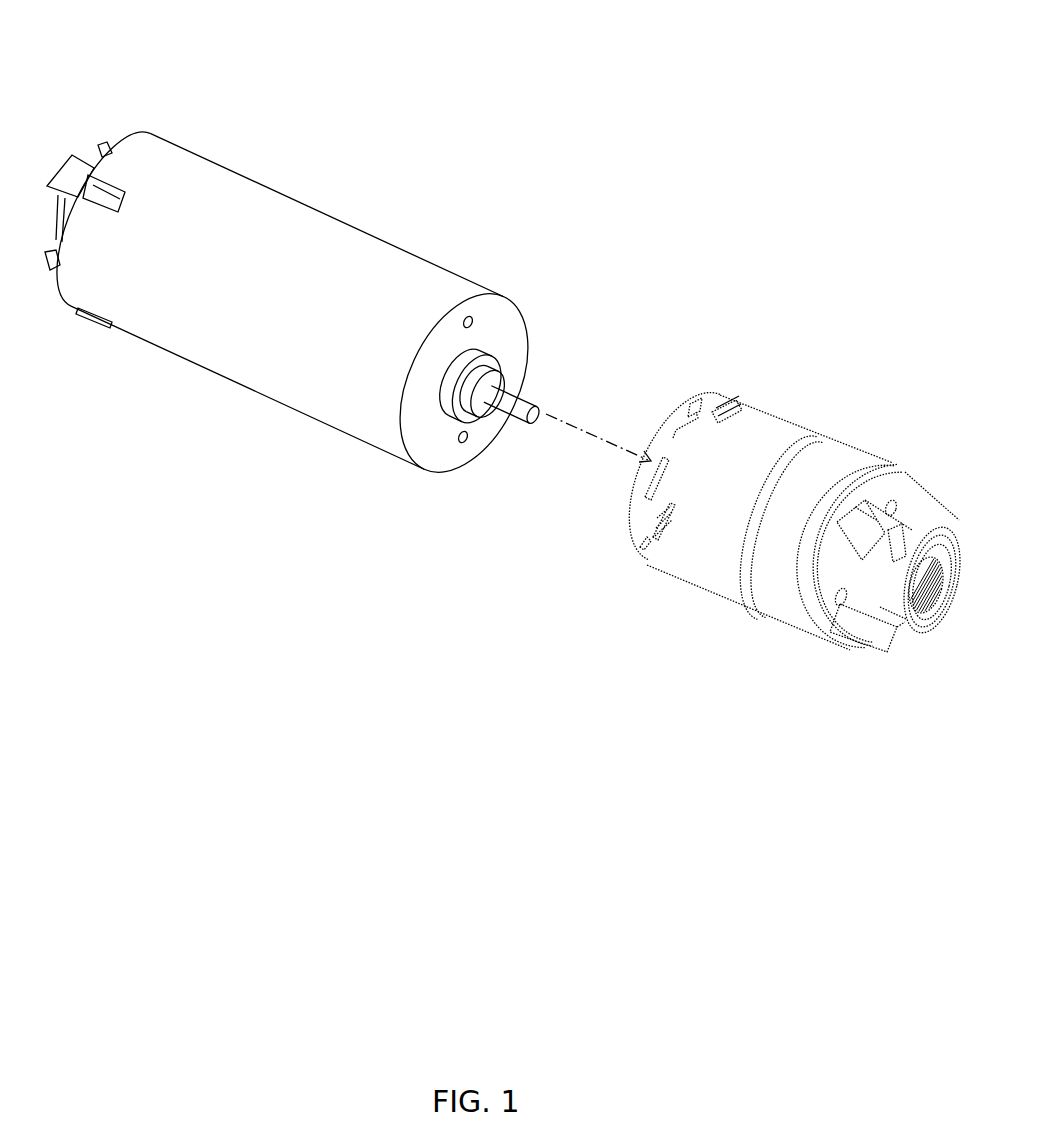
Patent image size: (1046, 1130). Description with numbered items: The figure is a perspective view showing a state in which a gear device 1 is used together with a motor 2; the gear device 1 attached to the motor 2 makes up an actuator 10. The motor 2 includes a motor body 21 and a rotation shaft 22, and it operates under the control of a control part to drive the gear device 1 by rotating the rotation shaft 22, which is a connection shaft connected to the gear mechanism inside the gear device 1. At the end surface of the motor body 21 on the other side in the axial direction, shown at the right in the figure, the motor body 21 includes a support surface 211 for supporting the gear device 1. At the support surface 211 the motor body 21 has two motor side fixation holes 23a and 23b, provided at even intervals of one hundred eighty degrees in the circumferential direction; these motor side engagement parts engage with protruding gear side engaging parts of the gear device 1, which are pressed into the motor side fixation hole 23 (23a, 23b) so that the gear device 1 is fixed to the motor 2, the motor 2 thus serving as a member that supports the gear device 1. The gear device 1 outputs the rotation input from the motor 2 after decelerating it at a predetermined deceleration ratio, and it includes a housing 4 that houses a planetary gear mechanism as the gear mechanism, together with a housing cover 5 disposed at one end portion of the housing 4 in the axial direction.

The actuator 10 is at (533, 31).
The gear device 1 is at (777, 515).
The motor 2 is at (325, 342).
The motor body 21 is at (393, 240).
The support surface 211 is at (495, 332).
The rotation shaft 22 is at (523, 395).
The motor side fixation hole 23 is at (493, 394).
The motor side fixation hole 23a is at (475, 318).
The motor side fixation hole 23b is at (462, 444).
The housing 4 is at (713, 583).
The housing cover 5 is at (643, 557).